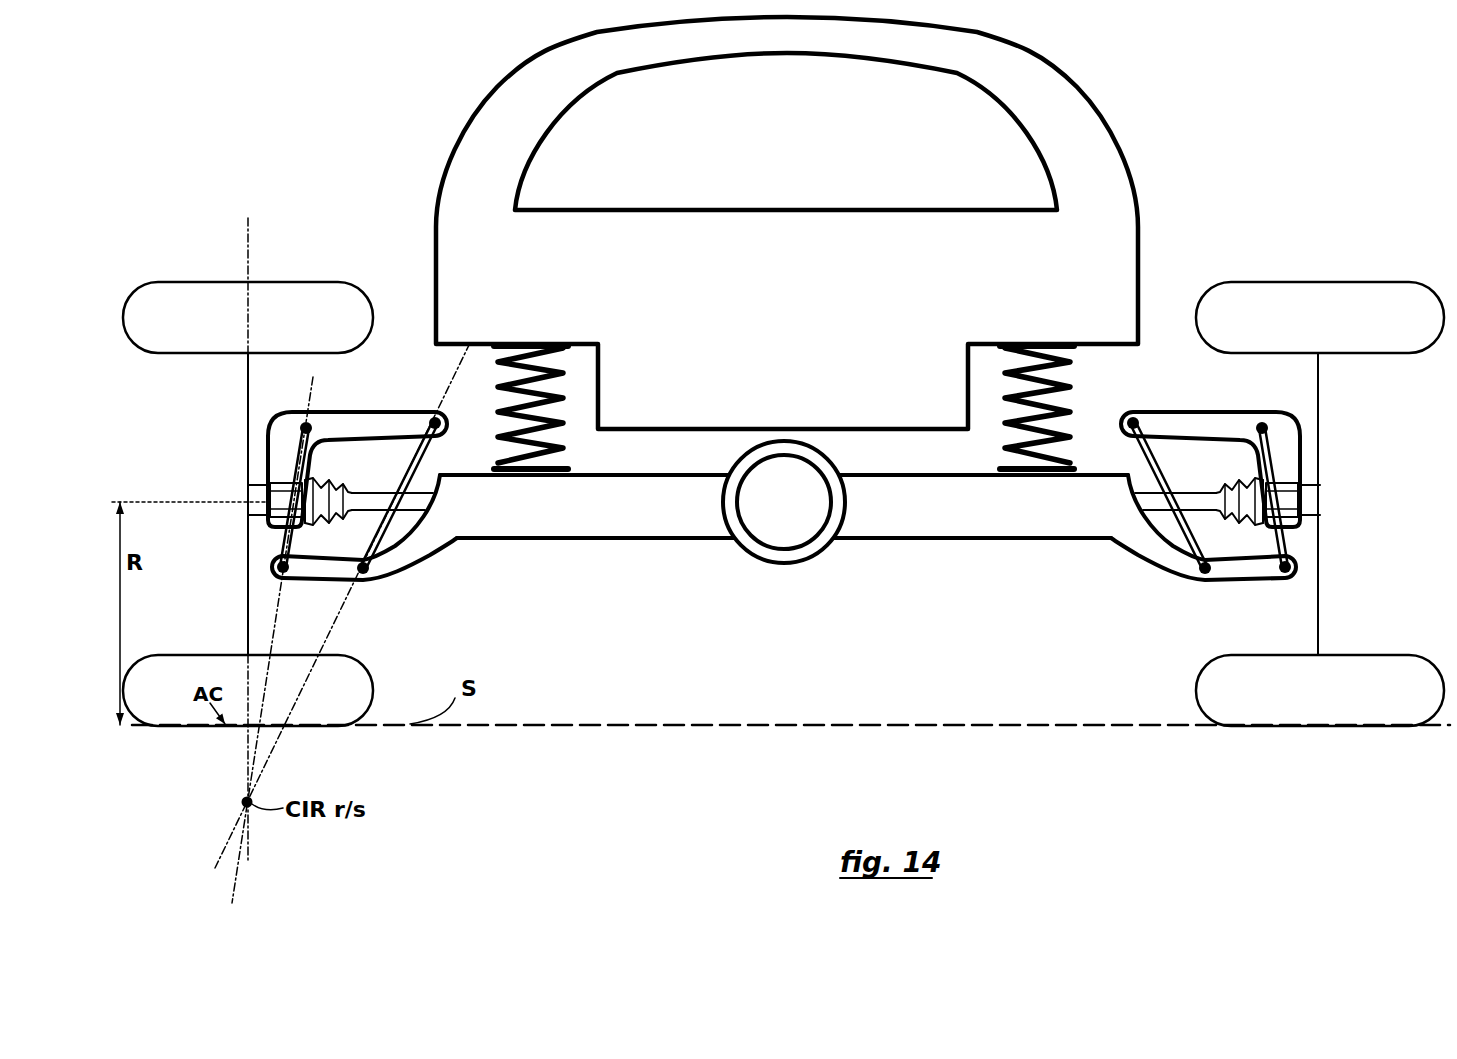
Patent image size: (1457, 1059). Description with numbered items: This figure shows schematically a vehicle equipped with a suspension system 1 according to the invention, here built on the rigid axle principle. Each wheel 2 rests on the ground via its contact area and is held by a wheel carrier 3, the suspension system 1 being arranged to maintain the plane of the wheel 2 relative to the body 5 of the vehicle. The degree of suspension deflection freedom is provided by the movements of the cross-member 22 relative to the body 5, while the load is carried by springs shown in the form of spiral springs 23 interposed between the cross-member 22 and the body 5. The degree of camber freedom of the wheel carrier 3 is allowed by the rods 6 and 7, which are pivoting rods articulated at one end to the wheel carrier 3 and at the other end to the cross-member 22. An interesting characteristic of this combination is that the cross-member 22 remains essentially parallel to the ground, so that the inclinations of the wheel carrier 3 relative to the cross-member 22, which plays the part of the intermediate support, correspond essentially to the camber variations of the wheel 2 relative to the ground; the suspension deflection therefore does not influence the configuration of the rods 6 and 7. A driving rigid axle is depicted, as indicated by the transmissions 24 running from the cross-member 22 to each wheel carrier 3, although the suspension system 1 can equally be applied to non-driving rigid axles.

The suspension system 1 is at (704, 649).
The wheel 2 is at (247, 608).
The wheel carrier 3 is at (333, 421).
The body 5 is at (685, 311).
The rod 6 is at (300, 463).
The rod 7 is at (416, 463).
The cross-member 22 is at (930, 517).
The spiral springs 23 is at (1072, 385).
The transmissions 24 is at (410, 503).